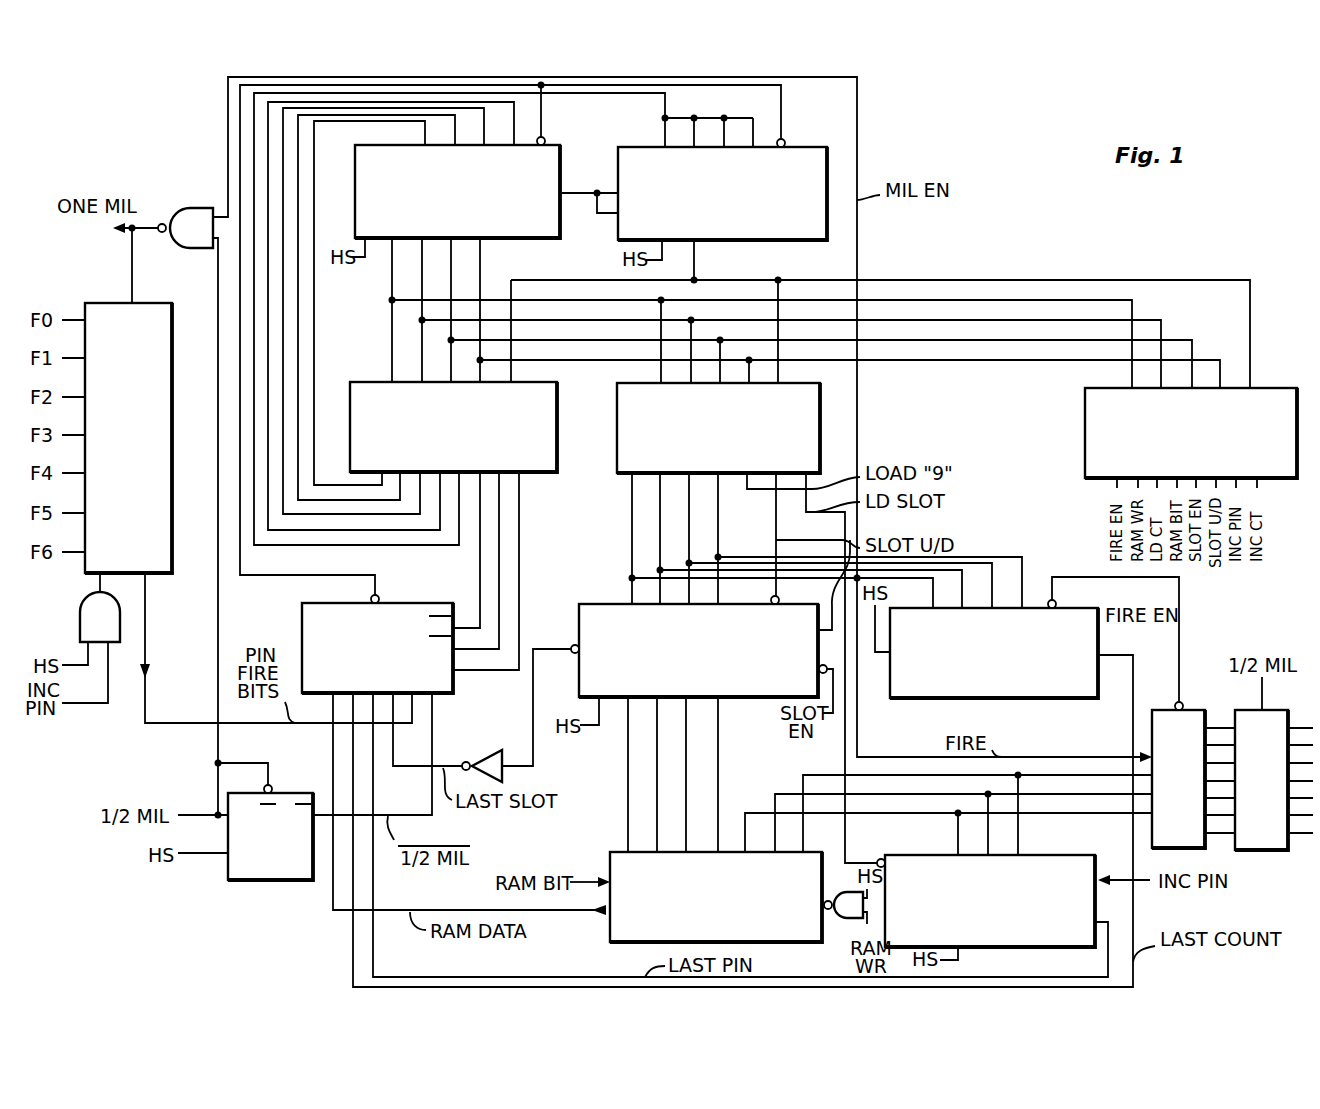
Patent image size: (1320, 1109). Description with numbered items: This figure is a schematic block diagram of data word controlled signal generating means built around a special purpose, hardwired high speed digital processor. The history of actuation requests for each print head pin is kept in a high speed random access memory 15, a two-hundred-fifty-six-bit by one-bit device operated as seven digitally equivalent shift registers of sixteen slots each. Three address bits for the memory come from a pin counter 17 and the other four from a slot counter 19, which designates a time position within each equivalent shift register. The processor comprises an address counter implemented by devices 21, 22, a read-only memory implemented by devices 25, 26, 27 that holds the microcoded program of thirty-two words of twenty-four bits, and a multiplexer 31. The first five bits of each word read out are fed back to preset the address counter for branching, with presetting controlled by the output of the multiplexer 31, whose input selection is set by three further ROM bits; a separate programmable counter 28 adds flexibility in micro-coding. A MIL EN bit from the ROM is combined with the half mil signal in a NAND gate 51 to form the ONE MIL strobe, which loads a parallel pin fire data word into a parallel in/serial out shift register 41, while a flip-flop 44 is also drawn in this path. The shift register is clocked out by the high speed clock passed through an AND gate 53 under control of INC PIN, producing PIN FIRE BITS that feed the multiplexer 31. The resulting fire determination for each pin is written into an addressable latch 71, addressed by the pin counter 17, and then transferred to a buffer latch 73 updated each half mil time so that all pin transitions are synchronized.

The random access memory 15 is at (610, 852).
The pin counter 17 is at (1018, 948).
The slot counter 19 is at (582, 604).
The address counter device 21 is at (355, 192).
The address counter device 22 is at (827, 158).
The read-only memory device 25 is at (366, 382).
The read-only memory device 26 is at (617, 411).
The read-only memory device 27 is at (1085, 401).
The programmable counter 28 is at (1058, 699).
The multiplexer 31 is at (425, 603).
The parallel in/serial out shift register 41 is at (175, 328).
The flip-flop 44 is at (258, 881).
The NAND gate 51 is at (196, 207).
The AND gate 53 is at (80, 622).
The addressable latch 71 is at (1196, 710).
The buffer latch 73 is at (1262, 851).